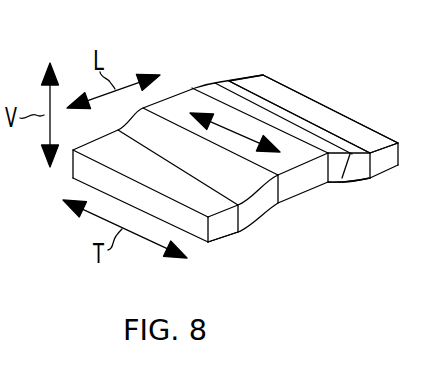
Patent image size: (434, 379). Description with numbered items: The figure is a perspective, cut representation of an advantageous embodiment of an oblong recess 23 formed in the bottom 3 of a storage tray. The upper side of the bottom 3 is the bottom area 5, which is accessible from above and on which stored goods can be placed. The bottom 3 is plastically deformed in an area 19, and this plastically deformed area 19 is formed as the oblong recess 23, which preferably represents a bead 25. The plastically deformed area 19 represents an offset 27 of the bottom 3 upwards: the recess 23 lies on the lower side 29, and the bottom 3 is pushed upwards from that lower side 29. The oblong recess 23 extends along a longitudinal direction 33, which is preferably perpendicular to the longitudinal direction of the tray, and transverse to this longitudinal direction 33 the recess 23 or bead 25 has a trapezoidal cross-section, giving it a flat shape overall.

The bottom 3 is at (389, 163).
The bottom area 5 is at (345, 137).
The plastically deformed area 19 is at (185, 85).
The oblong recess 23 is at (210, 92).
The bead 25 is at (278, 81).
The offset 27 is at (319, 191).
The lower side 29 is at (227, 238).
The longitudinal direction 33 is at (242, 132).